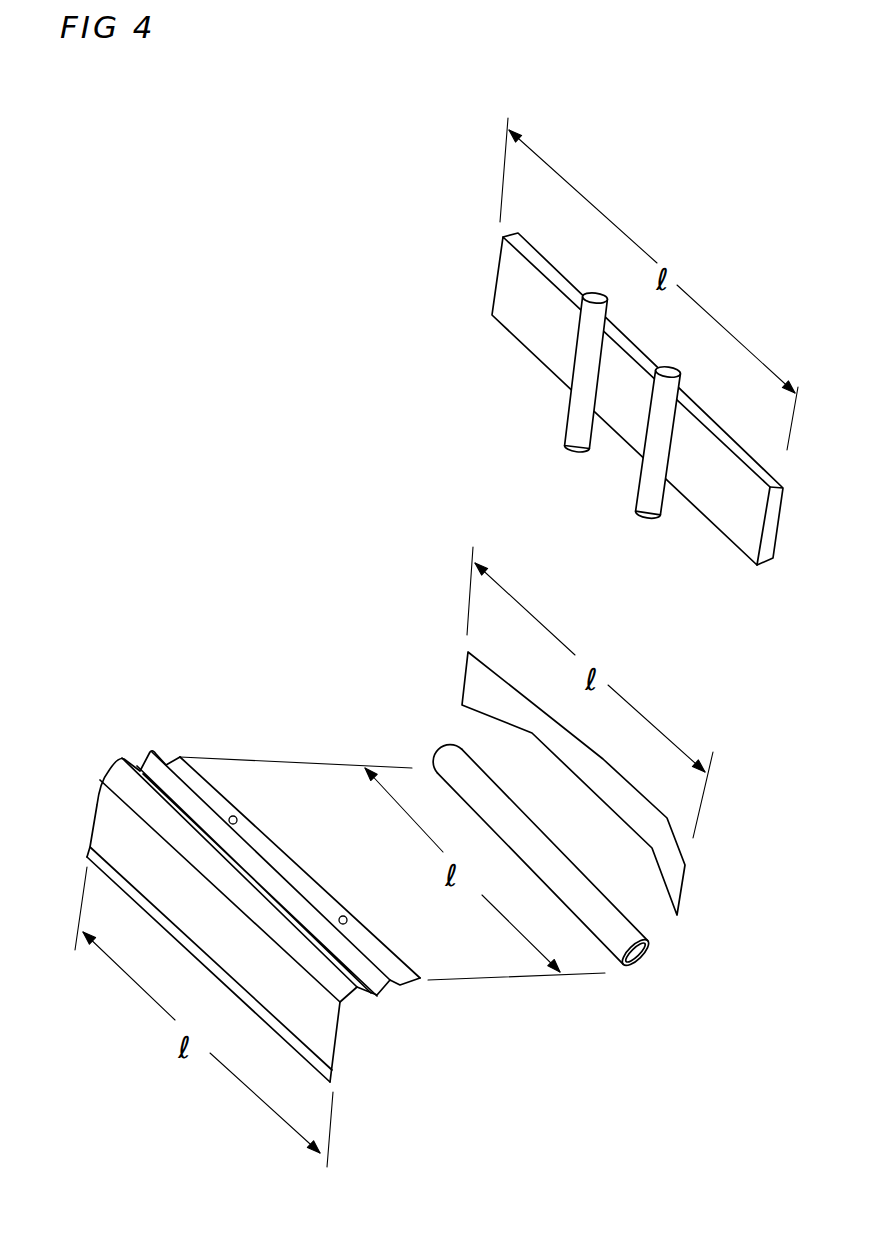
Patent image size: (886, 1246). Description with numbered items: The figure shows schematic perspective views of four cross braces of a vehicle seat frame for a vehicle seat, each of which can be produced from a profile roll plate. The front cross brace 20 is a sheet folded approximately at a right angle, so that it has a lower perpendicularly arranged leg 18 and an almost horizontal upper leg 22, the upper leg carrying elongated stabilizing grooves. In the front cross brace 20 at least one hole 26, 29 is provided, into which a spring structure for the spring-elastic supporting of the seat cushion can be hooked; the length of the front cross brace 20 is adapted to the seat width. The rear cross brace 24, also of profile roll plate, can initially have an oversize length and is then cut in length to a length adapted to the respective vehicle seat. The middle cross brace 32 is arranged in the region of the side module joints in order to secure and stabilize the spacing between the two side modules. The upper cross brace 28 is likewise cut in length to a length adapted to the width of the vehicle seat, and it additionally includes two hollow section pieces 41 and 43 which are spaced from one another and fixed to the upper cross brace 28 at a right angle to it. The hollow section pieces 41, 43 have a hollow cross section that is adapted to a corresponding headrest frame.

The lower perpendicularly arranged leg 18 is at (200, 935).
The front cross brace 20 is at (229, 916).
The upper leg 22 is at (313, 879).
The rear cross brace 24 is at (452, 762).
The hole 26 is at (347, 918).
The upper cross brace 28 is at (512, 287).
The hole 29 is at (237, 817).
The middle cross brace 32 is at (477, 672).
The hollow section piece 41 is at (578, 446).
The hollow section piece 43 is at (652, 514).